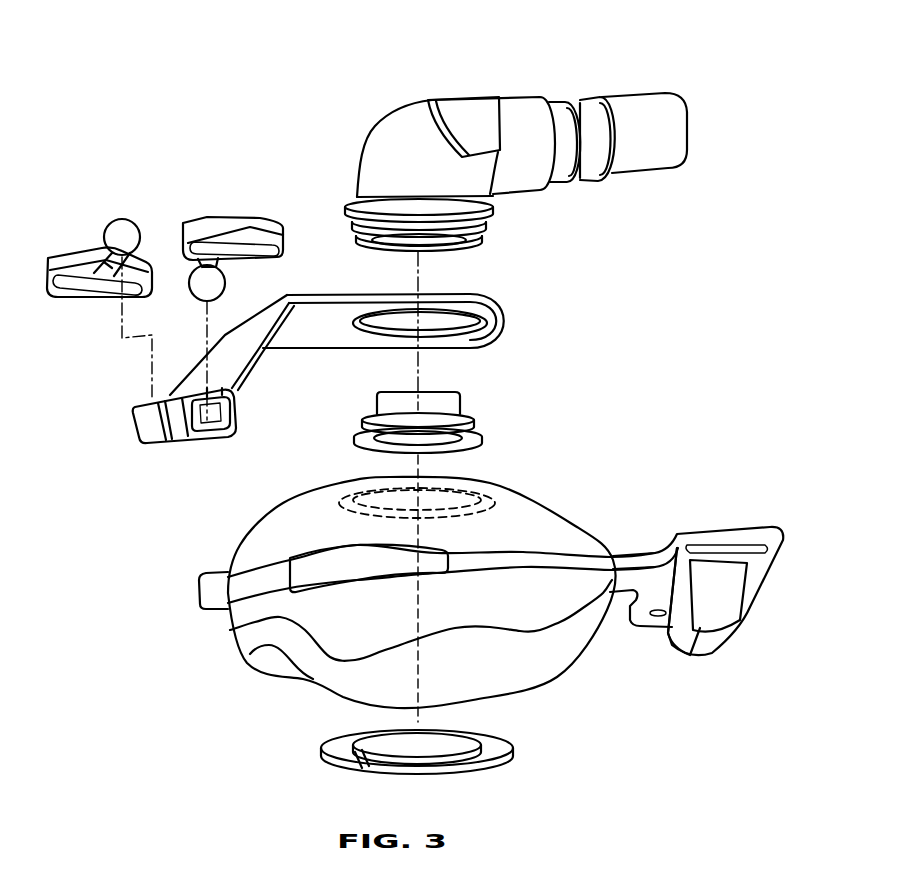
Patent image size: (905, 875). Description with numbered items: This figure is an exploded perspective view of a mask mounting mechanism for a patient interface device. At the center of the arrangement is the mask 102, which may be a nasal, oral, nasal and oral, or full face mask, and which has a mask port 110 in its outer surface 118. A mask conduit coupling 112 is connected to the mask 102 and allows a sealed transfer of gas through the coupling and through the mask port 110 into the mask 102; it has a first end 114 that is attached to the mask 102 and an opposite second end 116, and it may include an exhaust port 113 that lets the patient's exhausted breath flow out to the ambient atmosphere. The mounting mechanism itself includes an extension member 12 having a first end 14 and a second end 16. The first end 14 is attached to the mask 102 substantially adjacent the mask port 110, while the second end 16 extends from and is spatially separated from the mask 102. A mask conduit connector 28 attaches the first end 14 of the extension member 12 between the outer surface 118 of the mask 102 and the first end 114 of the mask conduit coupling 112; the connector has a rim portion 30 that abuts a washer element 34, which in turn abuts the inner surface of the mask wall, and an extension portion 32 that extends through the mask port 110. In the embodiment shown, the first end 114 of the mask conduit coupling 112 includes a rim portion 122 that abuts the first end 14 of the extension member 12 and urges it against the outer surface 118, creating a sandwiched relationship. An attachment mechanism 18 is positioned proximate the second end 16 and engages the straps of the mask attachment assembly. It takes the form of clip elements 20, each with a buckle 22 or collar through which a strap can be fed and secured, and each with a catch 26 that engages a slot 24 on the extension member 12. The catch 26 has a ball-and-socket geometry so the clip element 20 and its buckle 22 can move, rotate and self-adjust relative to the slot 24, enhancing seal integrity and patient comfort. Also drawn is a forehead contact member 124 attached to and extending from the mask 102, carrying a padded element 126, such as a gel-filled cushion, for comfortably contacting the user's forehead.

The extension member 12 is at (345, 329).
The first end 14 is at (470, 286).
The second end 16 is at (158, 460).
The attachment mechanism 18 is at (184, 415).
The clip element 20 is at (165, 233).
The buckle 22 is at (64, 296).
The slot 24 is at (215, 426).
The catch 26 is at (130, 219).
The mask conduit connector 28 is at (445, 393).
The rim portion 30 is at (482, 424).
The extension portion 32 is at (394, 390).
The washer element 34 is at (512, 746).
The mask 102 is at (453, 566).
The mask port 110 is at (504, 478).
The mask conduit coupling 112 is at (490, 149).
The exhaust port 113 is at (466, 96).
The first end 114 is at (540, 216).
The second end 116 is at (652, 82).
The outer surface 118 is at (427, 568).
The rim portion 122 is at (356, 196).
The forehead contact member 124 is at (713, 549).
The padded element 126 is at (741, 633).